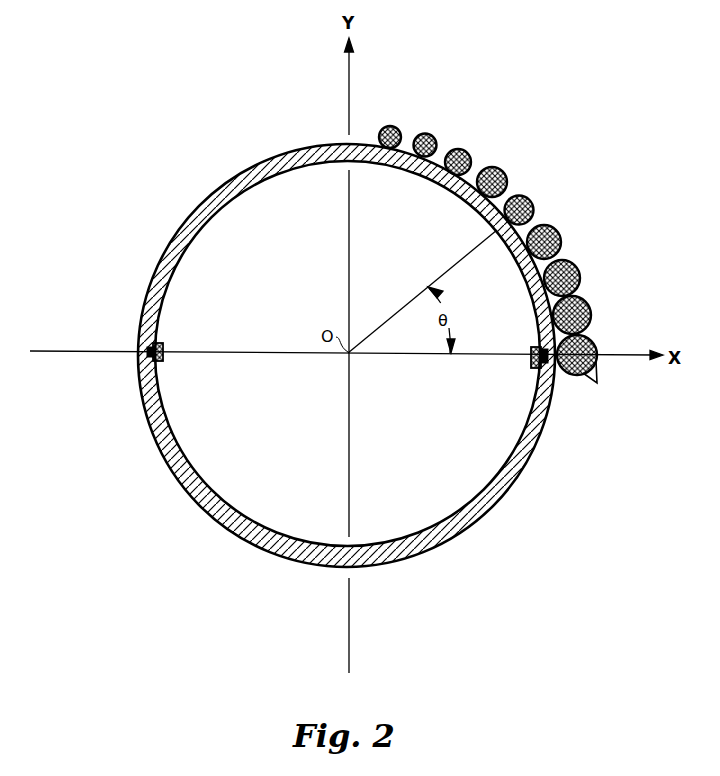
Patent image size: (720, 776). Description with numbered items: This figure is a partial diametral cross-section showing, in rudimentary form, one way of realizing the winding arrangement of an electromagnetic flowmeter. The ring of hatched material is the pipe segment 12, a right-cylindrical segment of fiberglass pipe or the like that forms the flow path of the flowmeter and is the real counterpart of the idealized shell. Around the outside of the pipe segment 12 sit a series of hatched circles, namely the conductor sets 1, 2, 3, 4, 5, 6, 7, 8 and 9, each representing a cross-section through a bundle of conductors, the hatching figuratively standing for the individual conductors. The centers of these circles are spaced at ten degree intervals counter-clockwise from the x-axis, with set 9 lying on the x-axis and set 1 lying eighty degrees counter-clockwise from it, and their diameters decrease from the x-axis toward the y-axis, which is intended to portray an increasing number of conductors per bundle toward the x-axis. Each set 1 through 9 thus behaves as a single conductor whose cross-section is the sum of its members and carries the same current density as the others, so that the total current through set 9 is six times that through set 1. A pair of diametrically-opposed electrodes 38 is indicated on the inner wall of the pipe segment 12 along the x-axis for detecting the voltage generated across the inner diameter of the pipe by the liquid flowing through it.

The bundle of conductors 1 is at (390, 126).
The bundle of conductors 2 is at (430, 134).
The bundle of conductors 3 is at (466, 149).
The bundle of conductors 4 is at (500, 167).
The bundle of conductors 5 is at (530, 196).
The bundle of conductors 6 is at (569, 221).
The bundle of conductors 7 is at (581, 262).
The bundle of conductors 8 is at (593, 300).
The bundle of conductors 9 is at (594, 343).
The pipe segment 12 is at (413, 557).
The electrodes 38 is at (163, 358).